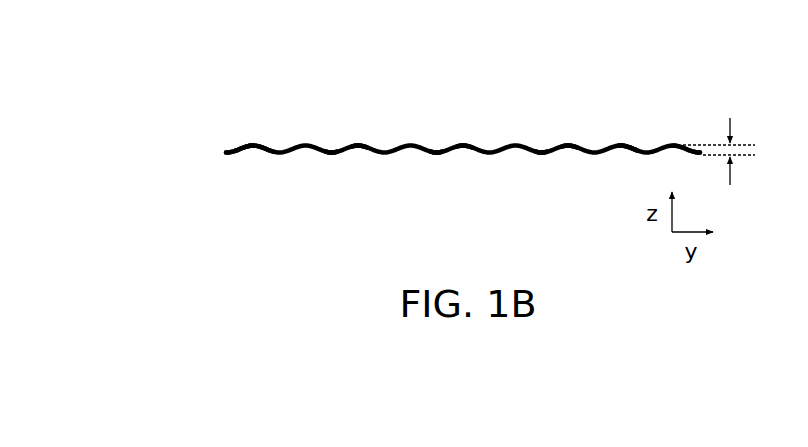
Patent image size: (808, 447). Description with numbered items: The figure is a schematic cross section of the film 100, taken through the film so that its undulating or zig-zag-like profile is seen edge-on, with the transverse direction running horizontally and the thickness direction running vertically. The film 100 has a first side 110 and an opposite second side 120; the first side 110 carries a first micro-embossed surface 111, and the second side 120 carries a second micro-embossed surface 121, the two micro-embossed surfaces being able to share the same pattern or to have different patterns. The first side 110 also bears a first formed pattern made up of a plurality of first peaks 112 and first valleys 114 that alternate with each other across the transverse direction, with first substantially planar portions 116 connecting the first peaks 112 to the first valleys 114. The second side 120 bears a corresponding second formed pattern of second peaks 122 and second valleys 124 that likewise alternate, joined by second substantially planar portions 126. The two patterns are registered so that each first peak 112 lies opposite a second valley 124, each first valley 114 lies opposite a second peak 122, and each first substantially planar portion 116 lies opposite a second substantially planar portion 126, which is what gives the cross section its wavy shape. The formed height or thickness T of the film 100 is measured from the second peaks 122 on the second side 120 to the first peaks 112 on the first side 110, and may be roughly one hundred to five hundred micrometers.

The film 100 is at (265, 64).
The first side 110 is at (243, 131).
The first micro-embossed surface 111 is at (267, 140).
The second side 120 is at (245, 163).
The second micro-embossed surface 121 is at (267, 158).
The first peaks 112 is at (363, 145).
The first valleys 114 is at (333, 149).
The second peaks 122 is at (333, 152).
The second valleys 124 is at (363, 152).
The first substantially planar portions 116 is at (629, 147).
The second substantially planar portions 126 is at (629, 153).
The formed thickness T is at (731, 120).